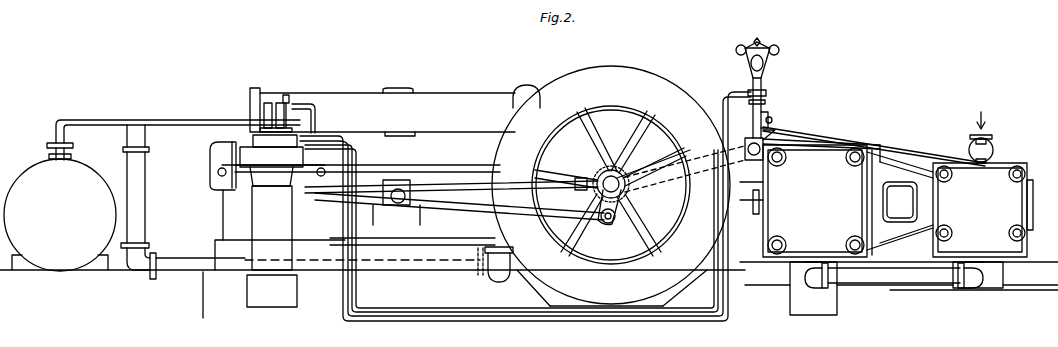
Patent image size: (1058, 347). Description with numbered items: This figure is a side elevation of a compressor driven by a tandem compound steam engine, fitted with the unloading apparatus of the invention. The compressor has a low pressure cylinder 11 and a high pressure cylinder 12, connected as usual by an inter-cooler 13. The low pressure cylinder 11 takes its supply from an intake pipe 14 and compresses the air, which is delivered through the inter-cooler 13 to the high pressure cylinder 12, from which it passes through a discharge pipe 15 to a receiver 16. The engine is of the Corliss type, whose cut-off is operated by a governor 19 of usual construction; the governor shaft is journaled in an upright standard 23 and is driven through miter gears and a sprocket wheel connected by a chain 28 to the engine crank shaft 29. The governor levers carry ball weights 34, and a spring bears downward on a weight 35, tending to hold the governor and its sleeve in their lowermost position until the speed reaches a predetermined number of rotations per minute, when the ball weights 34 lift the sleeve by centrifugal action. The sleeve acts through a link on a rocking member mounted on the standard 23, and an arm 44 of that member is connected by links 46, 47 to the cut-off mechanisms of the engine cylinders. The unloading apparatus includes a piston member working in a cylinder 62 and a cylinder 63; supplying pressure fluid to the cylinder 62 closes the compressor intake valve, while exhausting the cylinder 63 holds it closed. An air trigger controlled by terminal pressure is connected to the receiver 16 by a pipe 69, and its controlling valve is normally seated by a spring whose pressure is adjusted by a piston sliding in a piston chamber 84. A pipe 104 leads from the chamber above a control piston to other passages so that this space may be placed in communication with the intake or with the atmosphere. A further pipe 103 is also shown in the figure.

The low pressure cylinder 11 is at (232, 143).
The high pressure cylinder 12 is at (560, 162).
The inter-cooler 13 is at (443, 103).
The intake pipe 14 is at (287, 219).
The discharge pipe 15 is at (178, 267).
The receiver 16 is at (89, 181).
The governor 19 is at (751, 68).
The upright standard 23 is at (763, 112).
The chain 28 is at (667, 148).
The engine crank shaft 29 is at (610, 172).
The ball weights 34 is at (757, 39).
The weight 35 is at (772, 66).
The arm 44 is at (770, 130).
The link 46 is at (808, 141).
The link 47 is at (853, 142).
The cylinder 62 is at (300, 120).
The cylinder 63 is at (271, 160).
The pipe 69 is at (172, 119).
The piston chamber 84 is at (274, 103).
The return pipe 103 is at (437, 311).
The pipe 104 is at (373, 319).